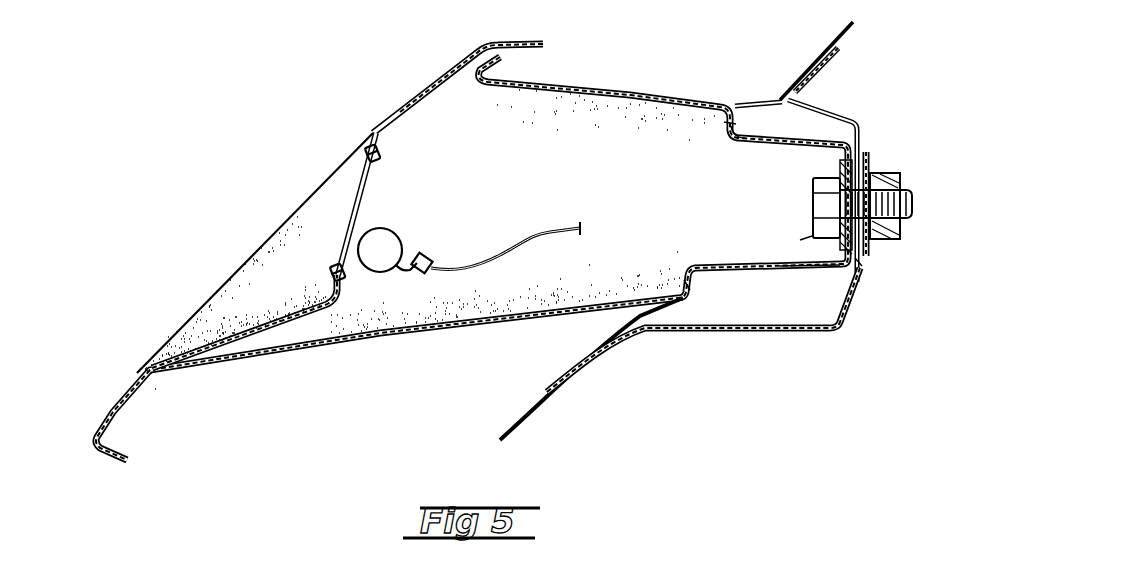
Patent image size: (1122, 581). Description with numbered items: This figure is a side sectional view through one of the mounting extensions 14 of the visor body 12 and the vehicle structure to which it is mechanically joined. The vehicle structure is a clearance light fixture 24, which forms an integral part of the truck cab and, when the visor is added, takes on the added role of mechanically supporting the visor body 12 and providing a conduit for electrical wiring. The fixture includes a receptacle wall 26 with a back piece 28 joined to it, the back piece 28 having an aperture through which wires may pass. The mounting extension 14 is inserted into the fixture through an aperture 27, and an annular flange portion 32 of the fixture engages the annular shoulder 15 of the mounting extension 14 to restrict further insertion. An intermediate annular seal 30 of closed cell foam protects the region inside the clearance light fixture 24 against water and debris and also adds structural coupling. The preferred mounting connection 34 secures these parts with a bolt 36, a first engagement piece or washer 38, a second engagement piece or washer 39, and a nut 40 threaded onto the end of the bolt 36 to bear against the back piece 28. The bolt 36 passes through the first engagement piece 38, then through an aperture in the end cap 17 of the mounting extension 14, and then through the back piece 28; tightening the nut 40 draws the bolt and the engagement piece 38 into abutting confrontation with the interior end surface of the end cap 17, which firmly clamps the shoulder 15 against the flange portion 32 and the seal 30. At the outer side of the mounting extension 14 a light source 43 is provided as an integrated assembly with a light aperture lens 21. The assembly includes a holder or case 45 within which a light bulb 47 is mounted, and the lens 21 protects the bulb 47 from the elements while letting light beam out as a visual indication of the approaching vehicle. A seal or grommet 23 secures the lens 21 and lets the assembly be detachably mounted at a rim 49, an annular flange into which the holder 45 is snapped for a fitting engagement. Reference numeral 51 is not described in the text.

The visor body 12 is at (233, 263).
The mounting extension 14 is at (607, 92).
The annular shoulder 15 is at (728, 126).
The end cap 17 is at (812, 266).
The light aperture lens 21 is at (357, 197).
The seal or grommet 23 is at (310, 257).
The clearance light fixture 24 is at (839, 108).
The receptacle wall 26 is at (858, 122).
The aperture 27 is at (745, 139).
The back piece 28 is at (869, 146).
The intermediate annular seal 30 is at (735, 108).
The annular flange portion 32 is at (750, 105).
The mounting connection 34 is at (811, 237).
The bolt 36 is at (818, 203).
The first engagement piece or washer 38 is at (845, 168).
The second engagement piece or washer 39 is at (866, 264).
The nut 40 is at (893, 228).
The light source 43 is at (340, 155).
The holder or case 45 is at (380, 197).
The light bulb 47 is at (390, 241).
The rim 49 is at (341, 297).
The upper clip 51 is at (371, 145).